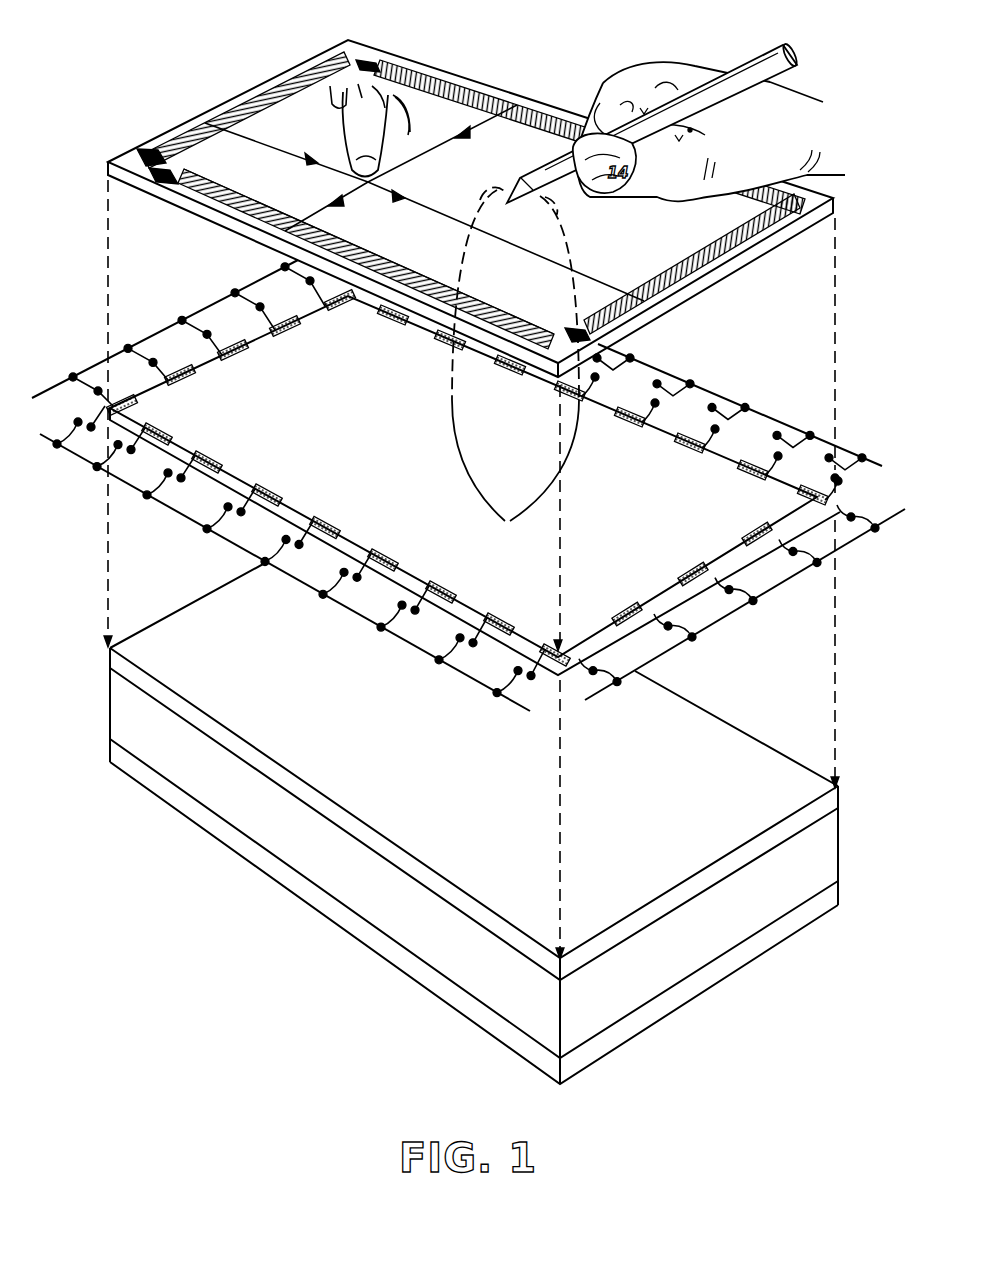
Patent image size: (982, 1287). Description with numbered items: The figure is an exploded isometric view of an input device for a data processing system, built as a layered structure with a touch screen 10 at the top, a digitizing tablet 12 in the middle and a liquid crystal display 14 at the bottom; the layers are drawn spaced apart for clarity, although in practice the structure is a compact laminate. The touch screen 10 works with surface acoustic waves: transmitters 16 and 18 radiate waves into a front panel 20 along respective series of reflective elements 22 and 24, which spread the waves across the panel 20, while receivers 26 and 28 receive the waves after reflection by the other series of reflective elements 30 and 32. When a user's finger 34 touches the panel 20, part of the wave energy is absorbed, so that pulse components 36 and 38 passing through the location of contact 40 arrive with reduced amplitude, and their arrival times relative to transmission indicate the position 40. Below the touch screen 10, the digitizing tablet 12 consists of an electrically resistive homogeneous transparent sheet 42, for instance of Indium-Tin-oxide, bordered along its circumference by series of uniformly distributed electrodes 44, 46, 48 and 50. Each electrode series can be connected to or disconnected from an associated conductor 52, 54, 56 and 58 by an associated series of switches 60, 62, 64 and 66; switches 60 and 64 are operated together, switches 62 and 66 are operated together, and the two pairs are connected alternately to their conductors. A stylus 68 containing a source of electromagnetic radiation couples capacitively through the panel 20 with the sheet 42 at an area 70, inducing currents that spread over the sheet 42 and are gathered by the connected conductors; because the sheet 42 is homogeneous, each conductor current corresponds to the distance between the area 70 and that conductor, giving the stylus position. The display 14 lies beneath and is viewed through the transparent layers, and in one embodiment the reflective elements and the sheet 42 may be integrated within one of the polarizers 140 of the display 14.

The touch screen 10 is at (110, 131).
The digitizing tablet 12 is at (141, 335).
The liquid crystal display 14 is at (100, 765).
The transmitter 16 is at (148, 150).
The transmitter 18 is at (368, 62).
The front panel 20 is at (168, 200).
The reflective elements 22 is at (266, 100).
The reflective elements 24 is at (552, 120).
The receiver 26 is at (567, 328).
The receiver 28 is at (180, 165).
The reflective elements 30 is at (728, 252).
The reflective elements 32 is at (333, 237).
The user's finger 34 is at (354, 146).
The pulse component 36 is at (290, 152).
The pulse component 38 is at (450, 139).
The location of contact 40 is at (385, 186).
The resistive sheet 42 is at (475, 485).
The electrodes 44 is at (170, 437).
The electrodes 46 is at (800, 498).
The electrodes 48 is at (388, 318).
The electrodes 50 is at (298, 328).
The conductor 52 is at (335, 600).
The conductor 54 is at (740, 610).
The conductor 56 is at (705, 388).
The conductor 58 is at (258, 282).
The switches 60 is at (60, 443).
The switches 62 is at (796, 552).
The switches 64 is at (657, 384).
The switches 66 is at (308, 282).
The stylus 68 is at (757, 66).
The area 70 is at (512, 518).
The polarizer 140 is at (268, 768).